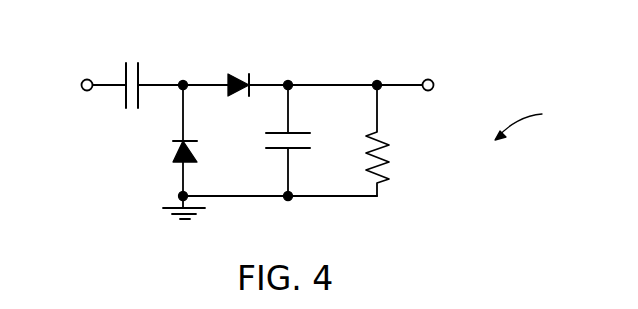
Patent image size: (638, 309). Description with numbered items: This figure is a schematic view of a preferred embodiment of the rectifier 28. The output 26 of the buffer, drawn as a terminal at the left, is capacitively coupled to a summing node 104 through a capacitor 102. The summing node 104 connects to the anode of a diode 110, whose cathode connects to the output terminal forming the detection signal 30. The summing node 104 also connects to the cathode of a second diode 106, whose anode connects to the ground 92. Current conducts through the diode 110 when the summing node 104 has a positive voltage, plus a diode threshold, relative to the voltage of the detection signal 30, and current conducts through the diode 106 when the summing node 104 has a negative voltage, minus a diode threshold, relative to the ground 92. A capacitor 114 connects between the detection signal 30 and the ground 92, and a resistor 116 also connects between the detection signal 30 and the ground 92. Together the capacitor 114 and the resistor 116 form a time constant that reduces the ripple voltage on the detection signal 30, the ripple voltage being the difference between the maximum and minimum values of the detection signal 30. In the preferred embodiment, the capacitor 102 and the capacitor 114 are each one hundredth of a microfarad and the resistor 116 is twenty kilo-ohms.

The output of the buffer 26 is at (83, 80).
The capacitor 102 is at (126, 72).
The summing node 104 is at (172, 86).
The diode 110 is at (228, 78).
The detection signal 30 is at (425, 79).
The capacitor 114 is at (276, 148).
The resistor 116 is at (390, 158).
The diode 106 is at (173, 155).
The ground 92 is at (183, 186).
The rectifier 28 is at (536, 125).